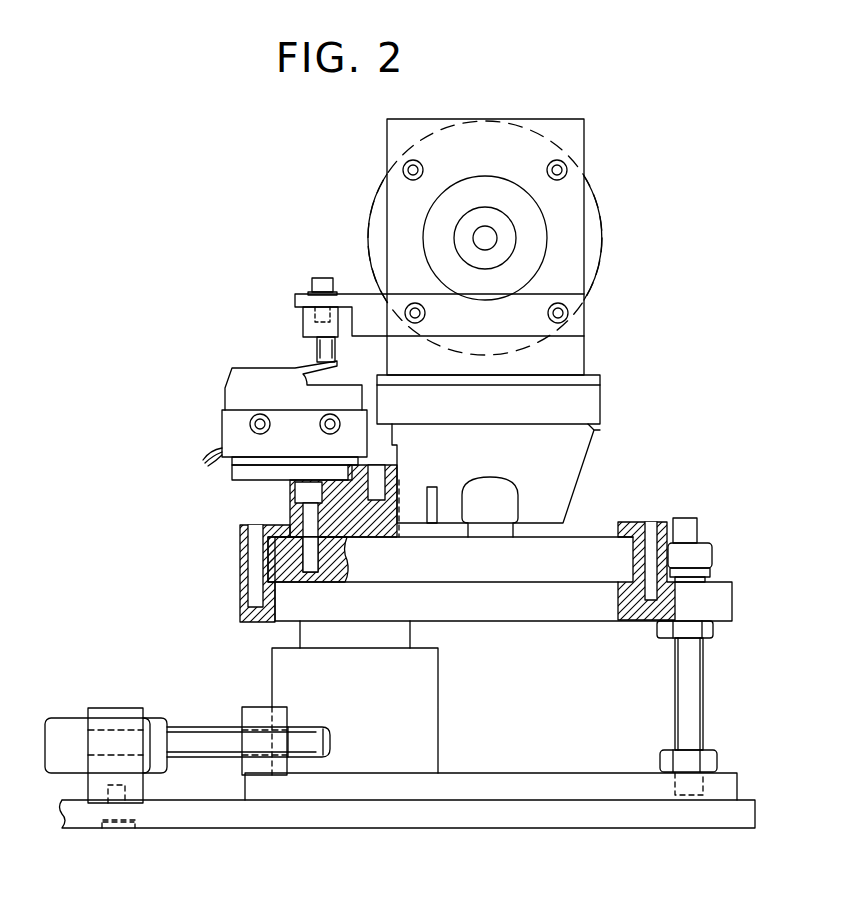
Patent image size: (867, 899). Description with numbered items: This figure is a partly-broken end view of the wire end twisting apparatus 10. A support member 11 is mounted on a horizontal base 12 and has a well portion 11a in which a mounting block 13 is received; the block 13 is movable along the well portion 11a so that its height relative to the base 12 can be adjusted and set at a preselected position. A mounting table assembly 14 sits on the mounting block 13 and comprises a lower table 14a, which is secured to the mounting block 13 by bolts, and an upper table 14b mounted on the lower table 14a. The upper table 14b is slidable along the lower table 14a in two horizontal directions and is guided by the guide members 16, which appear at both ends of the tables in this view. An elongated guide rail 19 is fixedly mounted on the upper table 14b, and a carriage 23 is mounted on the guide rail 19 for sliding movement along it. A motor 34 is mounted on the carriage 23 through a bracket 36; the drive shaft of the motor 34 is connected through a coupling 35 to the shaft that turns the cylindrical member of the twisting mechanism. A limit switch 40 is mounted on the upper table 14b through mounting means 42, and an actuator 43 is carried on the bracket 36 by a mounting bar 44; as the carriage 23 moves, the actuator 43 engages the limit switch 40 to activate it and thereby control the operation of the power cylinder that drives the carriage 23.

The wire end twisting apparatus 10 is at (595, 149).
The support member 11 is at (553, 790).
The well portion 11a is at (425, 706).
The horizontal base 12 is at (532, 817).
The mounting block 13 is at (400, 637).
The mounting table assembly 14 is at (500, 579).
The lower table 14a is at (550, 605).
The upper table 14b is at (588, 547).
The guide members 16 is at (665, 522).
The guide rail 19 is at (508, 497).
The carriage 23 is at (577, 438).
The motor 34 is at (592, 261).
The coupling 35 is at (497, 238).
The bracket 36 is at (392, 148).
The limit switch 40 is at (230, 421).
The mounting means 42 is at (290, 502).
The actuator 43 is at (303, 320).
The mounting bar 44 is at (360, 293).